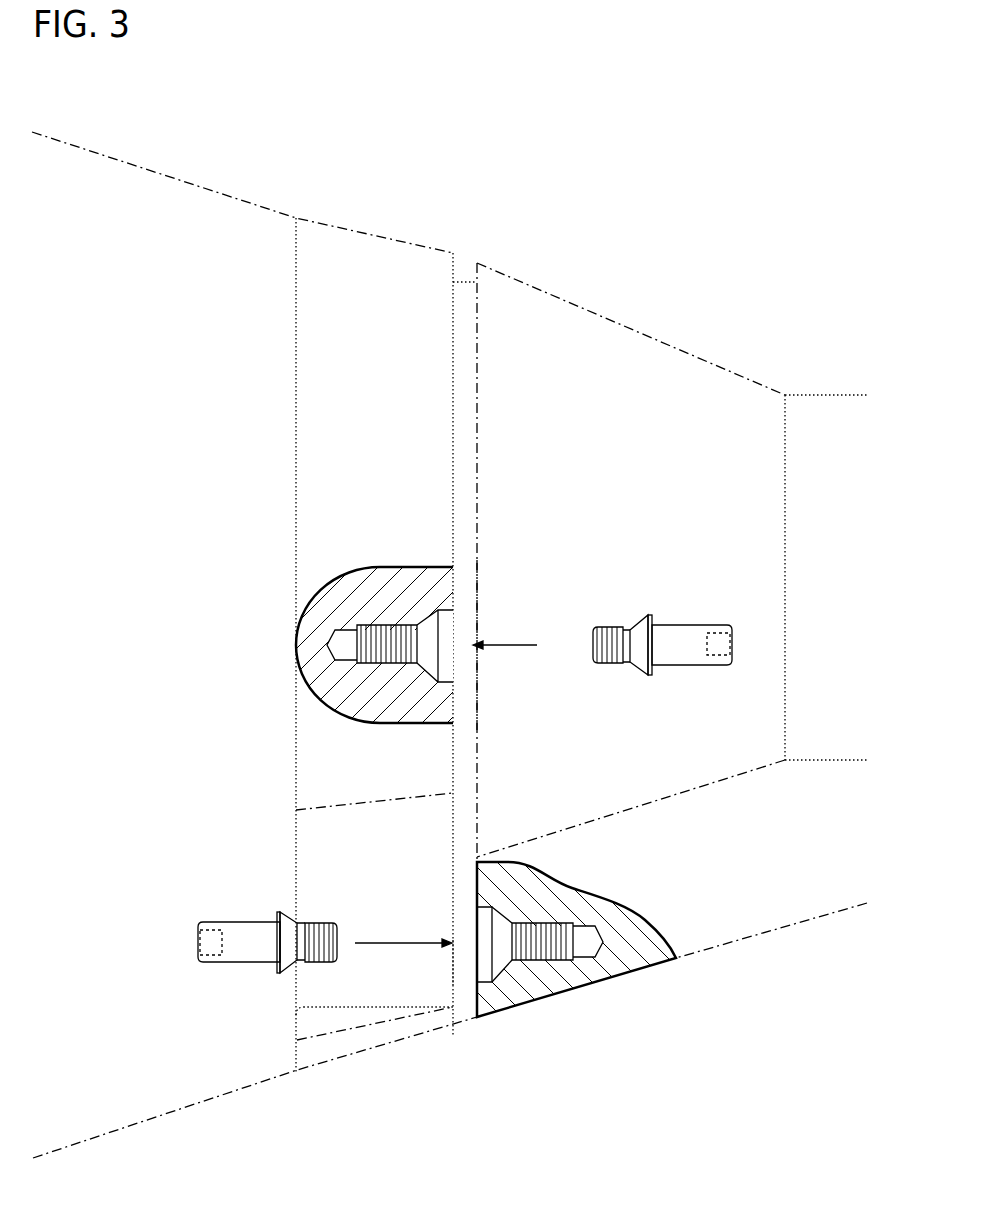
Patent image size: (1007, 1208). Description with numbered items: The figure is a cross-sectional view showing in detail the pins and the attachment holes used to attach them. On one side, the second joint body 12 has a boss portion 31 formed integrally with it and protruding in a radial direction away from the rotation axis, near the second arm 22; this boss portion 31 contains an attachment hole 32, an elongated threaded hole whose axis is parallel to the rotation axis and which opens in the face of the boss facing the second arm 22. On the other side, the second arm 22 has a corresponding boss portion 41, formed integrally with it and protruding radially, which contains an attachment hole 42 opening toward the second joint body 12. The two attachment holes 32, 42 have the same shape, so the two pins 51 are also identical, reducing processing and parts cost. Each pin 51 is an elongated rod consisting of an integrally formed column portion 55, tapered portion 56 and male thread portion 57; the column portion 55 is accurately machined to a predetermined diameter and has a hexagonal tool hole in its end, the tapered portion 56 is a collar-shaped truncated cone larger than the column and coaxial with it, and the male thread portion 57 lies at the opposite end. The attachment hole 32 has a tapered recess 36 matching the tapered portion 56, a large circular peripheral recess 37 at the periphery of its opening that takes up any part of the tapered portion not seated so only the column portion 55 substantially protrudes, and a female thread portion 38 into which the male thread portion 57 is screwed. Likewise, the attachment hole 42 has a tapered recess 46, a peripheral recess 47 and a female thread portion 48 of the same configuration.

The second joint body 12 is at (273, 210).
The second arm 22 is at (661, 335).
The boss portion 31 is at (375, 593).
The attachment hole 32 is at (474, 606).
The tapered recess 36 is at (422, 628).
The peripheral recess 37 is at (448, 612).
The female thread portion 38 is at (378, 623).
The boss portion 41 is at (578, 937).
The attachment hole 42 is at (458, 963).
The tapered recess 46 is at (503, 963).
The peripheral recess 47 is at (478, 972).
The female thread portion 48 is at (558, 962).
The pin 51 is at (464, 811).
The column portion 55 is at (692, 655).
The tapered portion 56 is at (638, 668).
The male thread portion 57 is at (615, 665).